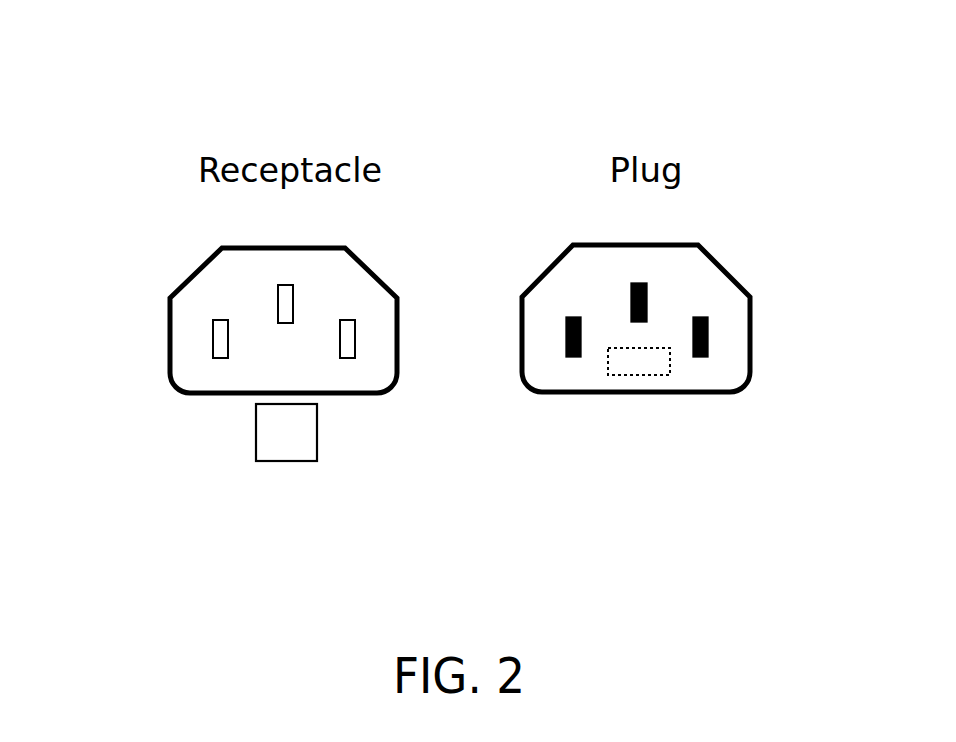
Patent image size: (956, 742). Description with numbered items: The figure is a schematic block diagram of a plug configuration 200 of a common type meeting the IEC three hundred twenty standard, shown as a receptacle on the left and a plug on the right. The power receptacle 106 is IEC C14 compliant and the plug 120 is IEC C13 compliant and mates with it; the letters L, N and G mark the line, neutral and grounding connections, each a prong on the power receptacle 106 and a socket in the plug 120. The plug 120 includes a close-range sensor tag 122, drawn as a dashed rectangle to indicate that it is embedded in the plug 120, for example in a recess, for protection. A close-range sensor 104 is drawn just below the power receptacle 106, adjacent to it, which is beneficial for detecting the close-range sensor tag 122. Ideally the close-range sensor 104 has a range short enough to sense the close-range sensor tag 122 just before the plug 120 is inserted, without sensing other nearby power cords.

The plug configuration 200 is at (148, 112).
The close-range sensor 104 is at (285, 461).
The power receptacle 106 is at (183, 393).
The plug 120 is at (742, 390).
The close-range sensor tag 122 is at (642, 375).